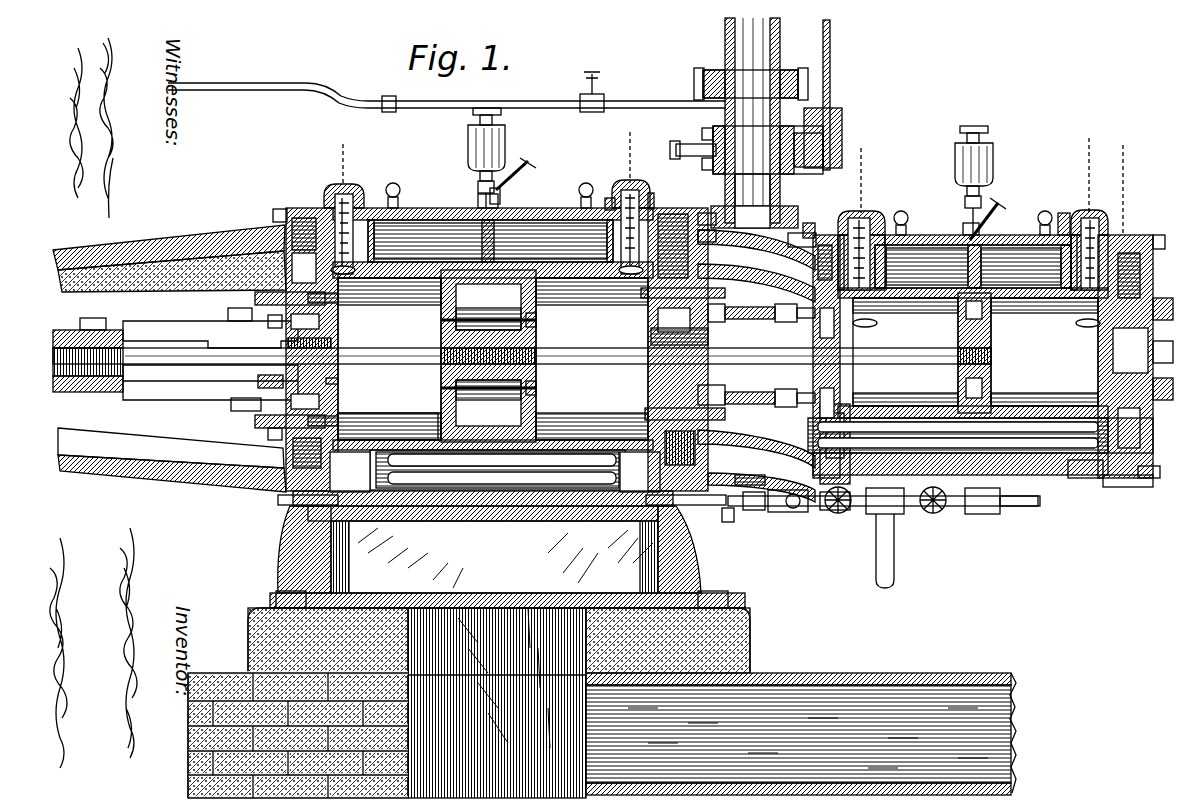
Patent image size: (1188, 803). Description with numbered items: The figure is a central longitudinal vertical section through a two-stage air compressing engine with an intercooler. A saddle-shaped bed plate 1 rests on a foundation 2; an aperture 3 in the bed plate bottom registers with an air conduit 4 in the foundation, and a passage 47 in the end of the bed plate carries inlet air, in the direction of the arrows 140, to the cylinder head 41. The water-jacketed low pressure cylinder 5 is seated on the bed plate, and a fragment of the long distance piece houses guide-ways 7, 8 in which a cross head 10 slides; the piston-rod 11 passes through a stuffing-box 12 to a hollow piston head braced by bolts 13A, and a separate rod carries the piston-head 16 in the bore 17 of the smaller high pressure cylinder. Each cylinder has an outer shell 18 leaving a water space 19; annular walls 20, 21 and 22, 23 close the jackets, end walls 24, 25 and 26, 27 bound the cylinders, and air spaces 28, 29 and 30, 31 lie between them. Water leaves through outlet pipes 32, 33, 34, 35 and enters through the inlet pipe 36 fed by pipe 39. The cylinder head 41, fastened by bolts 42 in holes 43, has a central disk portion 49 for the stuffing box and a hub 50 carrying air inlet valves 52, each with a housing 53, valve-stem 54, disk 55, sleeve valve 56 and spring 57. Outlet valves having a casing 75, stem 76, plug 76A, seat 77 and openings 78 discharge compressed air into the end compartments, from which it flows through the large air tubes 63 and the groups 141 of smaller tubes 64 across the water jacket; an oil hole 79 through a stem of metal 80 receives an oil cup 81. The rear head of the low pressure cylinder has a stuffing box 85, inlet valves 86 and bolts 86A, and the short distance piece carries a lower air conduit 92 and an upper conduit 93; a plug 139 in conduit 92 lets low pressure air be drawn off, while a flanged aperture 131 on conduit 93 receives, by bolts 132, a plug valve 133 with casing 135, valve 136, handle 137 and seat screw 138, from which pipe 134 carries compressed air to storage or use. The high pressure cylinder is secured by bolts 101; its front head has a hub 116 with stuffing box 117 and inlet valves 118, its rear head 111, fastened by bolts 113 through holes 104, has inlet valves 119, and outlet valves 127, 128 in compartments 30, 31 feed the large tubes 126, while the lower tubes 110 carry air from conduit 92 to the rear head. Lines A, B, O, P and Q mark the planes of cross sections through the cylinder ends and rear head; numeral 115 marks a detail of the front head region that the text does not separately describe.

The bed plate 1 is at (694, 555).
The foundation 2 is at (507, 633).
The aperture 3 is at (497, 703).
The air conduit 4 is at (1008, 688).
The low pressure air compressing cylinder 5 is at (592, 359).
The guide-way 7 is at (158, 325).
The guide-way 8 is at (160, 391).
The cross head 10 is at (108, 322).
The piston-rod 11 is at (522, 365).
The stuffing-box 12 is at (265, 206).
The bolts 13A is at (530, 310).
The piston-head 16 is at (984, 362).
The bore 17 is at (1030, 347).
The outer cylindrical shell 18 is at (984, 227).
The water space 19 is at (912, 240).
The annular wall 20 is at (344, 200).
The annular wall 21 is at (618, 268).
The annular wall 22 is at (875, 306).
The annular wall 23 is at (1068, 290).
The end wall 24 is at (300, 200).
The end wall 25 is at (662, 202).
The end wall 26 is at (818, 227).
The end wall 27 is at (1120, 228).
The air space 28 is at (350, 472).
The air space 29 is at (640, 472).
The air space 30 is at (862, 208).
The air space 31 is at (1064, 215).
The water outlet pipe 32 is at (398, 184).
The water outlet pipe 33 is at (578, 175).
The water outlet pipe 34 is at (908, 210).
The water outlet pipe 35 is at (1041, 212).
The water inlet pipe 36 is at (834, 506).
The pipe 39 is at (888, 530).
The cylinder head 41 is at (262, 262).
The bolts 42 is at (270, 492).
The holes 43 is at (432, 375).
The passage 47 is at (290, 498).
The central disk portion 49 is at (250, 376).
The hub portion 50 is at (335, 420).
The air inlet valves 52 is at (247, 288).
The housing 53 is at (305, 361).
The valve-stem 54 is at (222, 303).
The disk 55 is at (332, 292).
The valve 56 is at (332, 300).
The spring 57 is at (260, 314).
The air tubes 63 is at (445, 215).
The air tubes 64 is at (497, 470).
The casing 75 is at (603, 195).
The valve stem 76 is at (350, 182).
The plug 76A is at (326, 186).
The valve seat 77 is at (370, 286).
The openings 78 is at (1012, 488).
The oil hole 79 is at (496, 178).
The stem of metal 80 is at (512, 200).
The oil cup 81 is at (498, 132).
The stuffing box 85 is at (691, 338).
The air inlet valves 86 is at (717, 300).
The bolts 86A is at (695, 205).
The air conduit 92 is at (756, 466).
The air conduit 93 is at (756, 266).
The bolts 101 is at (800, 470).
The holes 104 is at (1128, 489).
The air tubes 110 is at (958, 435).
The rear cylinder head 111 is at (1144, 435).
The bolts 113 is at (1156, 350).
The stud 115 is at (735, 311).
The central hub 116 is at (772, 314).
The stuffing box 117 is at (770, 384).
The air inlet valves 118 is at (708, 354).
The air inlet valves 119 is at (1150, 295).
The air tubes 126 is at (973, 266).
The outlet valves 127 is at (843, 204).
The outlet valves 128 is at (1088, 212).
The flanged aperture 131 is at (1086, 182).
The bolts 132 is at (815, 213).
The plug valve 133 is at (752, 196).
The pipe 134 is at (716, 48).
The casing 135 is at (751, 91).
The valve 136 is at (762, 150).
The operating handle 137 is at (822, 108).
The screw 138 is at (680, 142).
The plug 139 is at (748, 503).
The arrows 140 is at (673, 648).
The groups of air tubes 141 is at (1070, 470).
The section line A is at (339, 157).
The section line B is at (617, 156).
The section line O is at (854, 172).
The section line P is at (1084, 167).
The section line Q is at (1117, 182).